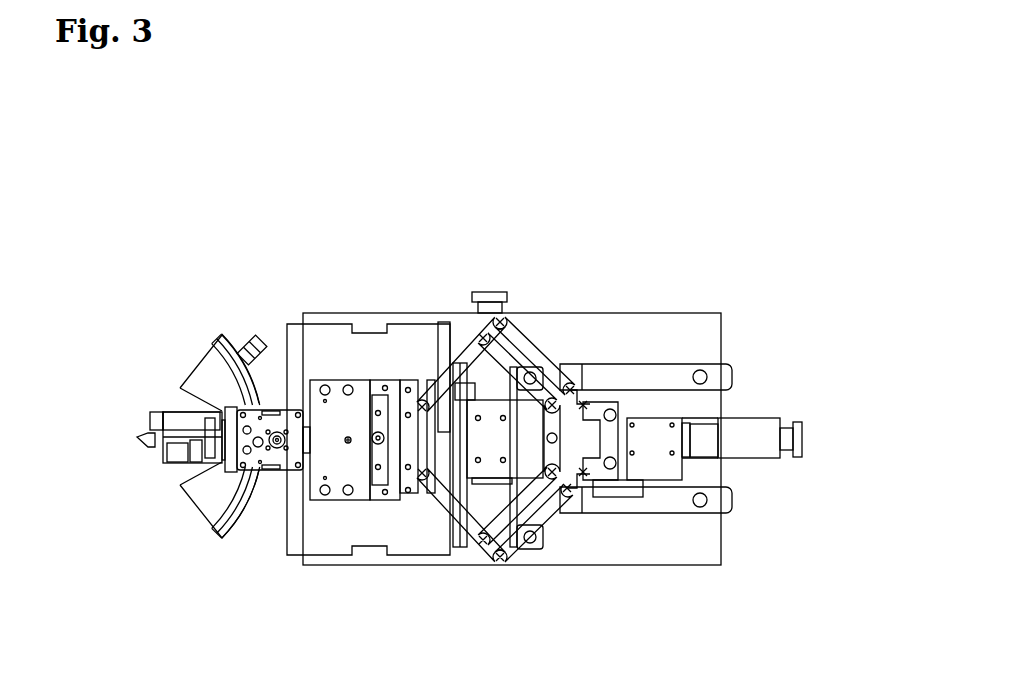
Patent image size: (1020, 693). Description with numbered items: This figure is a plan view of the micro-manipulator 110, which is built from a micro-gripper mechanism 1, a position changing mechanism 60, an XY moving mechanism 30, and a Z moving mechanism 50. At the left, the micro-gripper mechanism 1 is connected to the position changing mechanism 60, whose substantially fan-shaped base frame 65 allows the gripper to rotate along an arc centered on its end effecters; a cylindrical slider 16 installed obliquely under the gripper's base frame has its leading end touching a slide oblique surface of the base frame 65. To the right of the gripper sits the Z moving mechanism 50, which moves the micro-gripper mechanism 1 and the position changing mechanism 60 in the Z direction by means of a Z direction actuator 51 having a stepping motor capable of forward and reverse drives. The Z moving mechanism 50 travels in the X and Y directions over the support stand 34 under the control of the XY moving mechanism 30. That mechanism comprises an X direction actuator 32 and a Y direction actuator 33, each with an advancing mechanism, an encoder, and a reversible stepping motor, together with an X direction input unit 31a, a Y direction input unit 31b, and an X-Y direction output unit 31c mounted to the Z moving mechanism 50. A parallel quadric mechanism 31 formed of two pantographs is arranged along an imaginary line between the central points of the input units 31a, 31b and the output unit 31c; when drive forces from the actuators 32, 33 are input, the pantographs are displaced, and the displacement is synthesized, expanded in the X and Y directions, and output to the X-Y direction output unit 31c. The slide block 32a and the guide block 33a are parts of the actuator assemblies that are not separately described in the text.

The micro-gripper mechanism 1 is at (145, 402).
The cylindrical slider 16 is at (303, 460).
The XY moving mechanism 30 is at (472, 238).
The parallel quadric mechanism 31 is at (562, 355).
The X direction input unit 31a is at (597, 430).
The Y direction input unit 31b is at (545, 437).
The X-Y direction output unit 31c is at (427, 430).
The X direction actuator 32 is at (753, 418).
The slide block 32a is at (652, 430).
The Y direction actuator 33 is at (488, 292).
The guide block 33a is at (517, 420).
The support stand 34 is at (293, 555).
The Z moving mechanism 50 is at (333, 365).
The Z direction actuator 51 is at (412, 493).
The position changing mechanism 60 is at (240, 317).
The base frame 65 is at (180, 347).
The micro-manipulator 110 is at (512, 157).